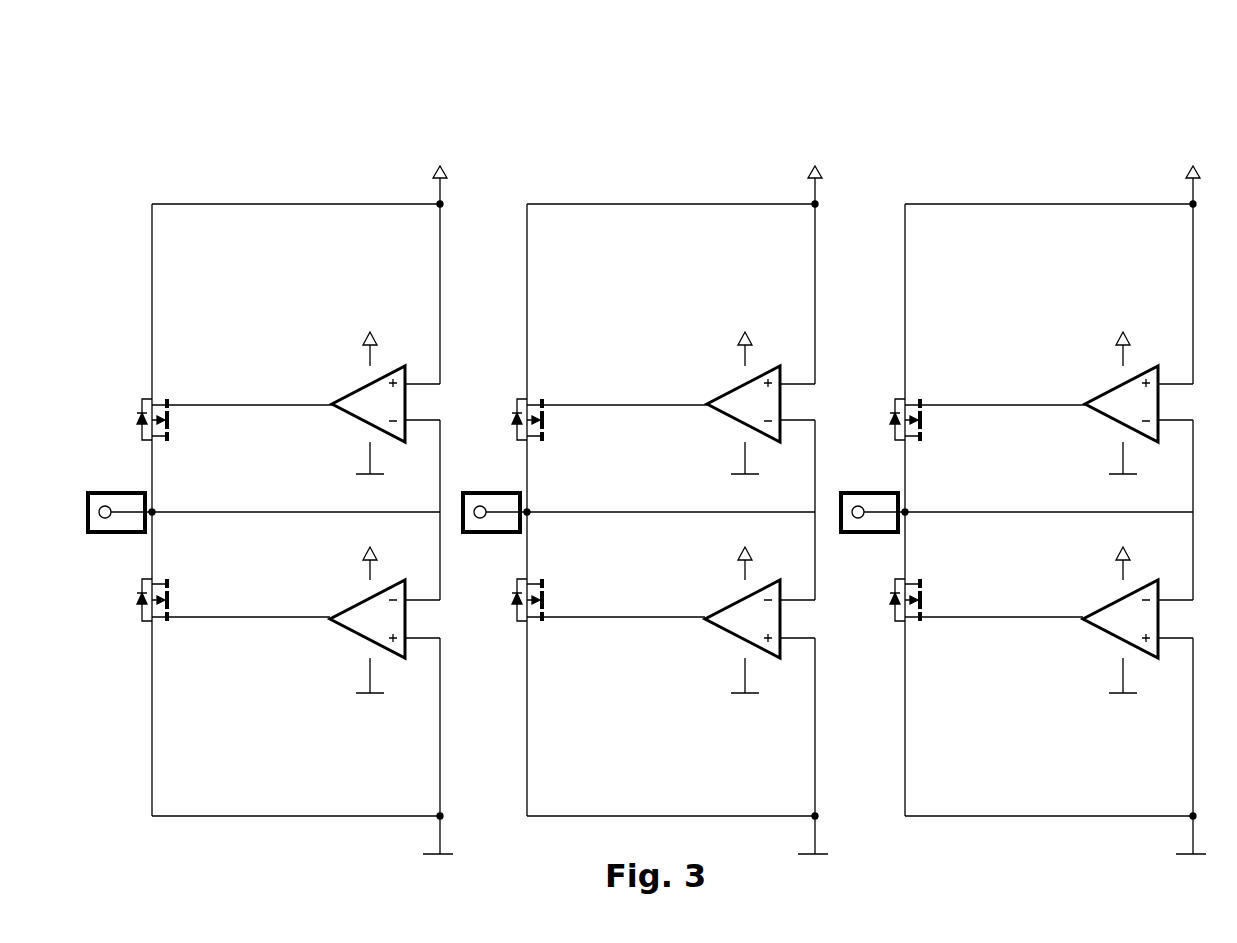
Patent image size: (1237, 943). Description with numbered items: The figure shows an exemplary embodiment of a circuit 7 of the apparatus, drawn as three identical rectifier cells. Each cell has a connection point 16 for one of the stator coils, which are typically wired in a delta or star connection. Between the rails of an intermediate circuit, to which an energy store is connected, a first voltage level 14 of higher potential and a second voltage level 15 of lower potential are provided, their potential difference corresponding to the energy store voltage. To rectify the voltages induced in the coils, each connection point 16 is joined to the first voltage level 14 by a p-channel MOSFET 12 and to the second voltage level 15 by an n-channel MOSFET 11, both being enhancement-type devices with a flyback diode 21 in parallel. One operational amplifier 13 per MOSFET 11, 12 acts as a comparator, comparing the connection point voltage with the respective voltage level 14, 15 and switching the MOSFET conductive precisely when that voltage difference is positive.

The circuit 7 is at (894, 92).
The n-channel MOSFET 11 is at (176, 589).
The p-channel MOSFET 12 is at (182, 395).
The operational amplifier 13 is at (368, 618).
The first voltage level 14 is at (312, 204).
The second voltage level 15 is at (212, 816).
The connection point 16 is at (118, 494).
The flyback diode 21 is at (139, 414).